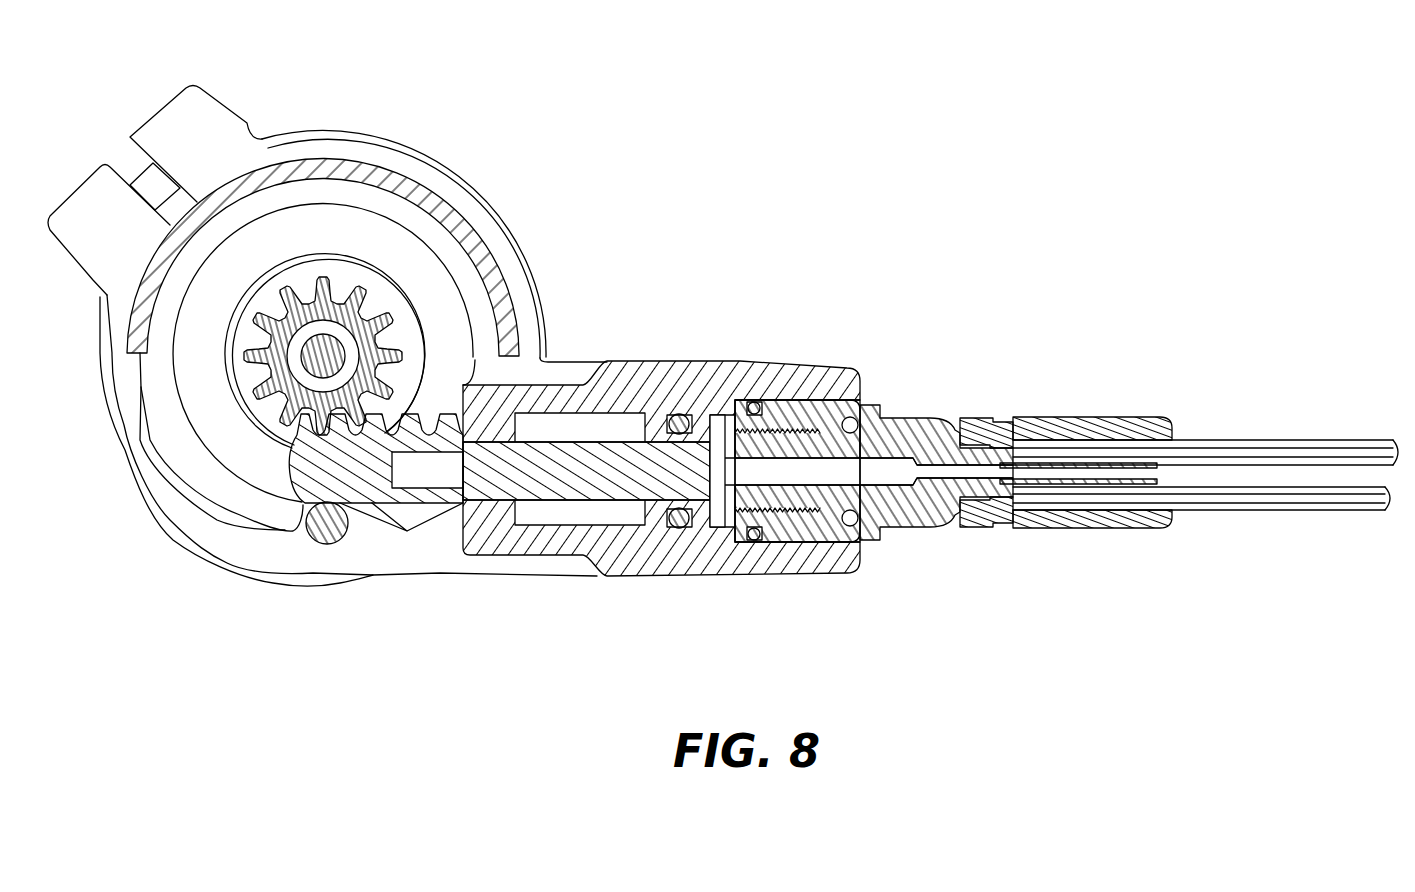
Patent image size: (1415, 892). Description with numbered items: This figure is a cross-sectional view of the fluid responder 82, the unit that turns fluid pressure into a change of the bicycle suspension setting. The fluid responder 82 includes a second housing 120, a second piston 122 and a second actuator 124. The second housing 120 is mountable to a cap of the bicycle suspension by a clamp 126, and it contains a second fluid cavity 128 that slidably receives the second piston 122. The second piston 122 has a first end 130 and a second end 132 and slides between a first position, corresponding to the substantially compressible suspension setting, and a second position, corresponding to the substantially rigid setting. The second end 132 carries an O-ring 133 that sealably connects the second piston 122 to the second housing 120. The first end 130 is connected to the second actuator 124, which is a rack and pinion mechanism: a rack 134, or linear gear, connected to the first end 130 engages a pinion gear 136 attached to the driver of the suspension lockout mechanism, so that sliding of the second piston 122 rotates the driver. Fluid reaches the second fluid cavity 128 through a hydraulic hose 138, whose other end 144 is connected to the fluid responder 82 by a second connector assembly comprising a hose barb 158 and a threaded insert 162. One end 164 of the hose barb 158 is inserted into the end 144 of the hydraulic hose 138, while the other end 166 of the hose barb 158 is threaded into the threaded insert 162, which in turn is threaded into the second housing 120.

The fluid responder 82 is at (771, 168).
The second housing 120 is at (620, 543).
The second piston 122 is at (567, 468).
The second actuator 124 is at (233, 445).
The clamp 126 is at (322, 150).
The second fluid cavity 128 is at (713, 430).
The first end 130 is at (420, 460).
The second end 132 is at (688, 527).
The O-ring 133 is at (668, 518).
The rack 134 is at (323, 463).
The pinion gear 136 is at (355, 299).
The hydraulic hose 138 is at (1262, 440).
The other end 144 is at (1025, 460).
The hose barb 158 is at (890, 438).
The threaded insert 162 is at (797, 447).
The one end 164 is at (1100, 473).
The other end 166 is at (845, 417).